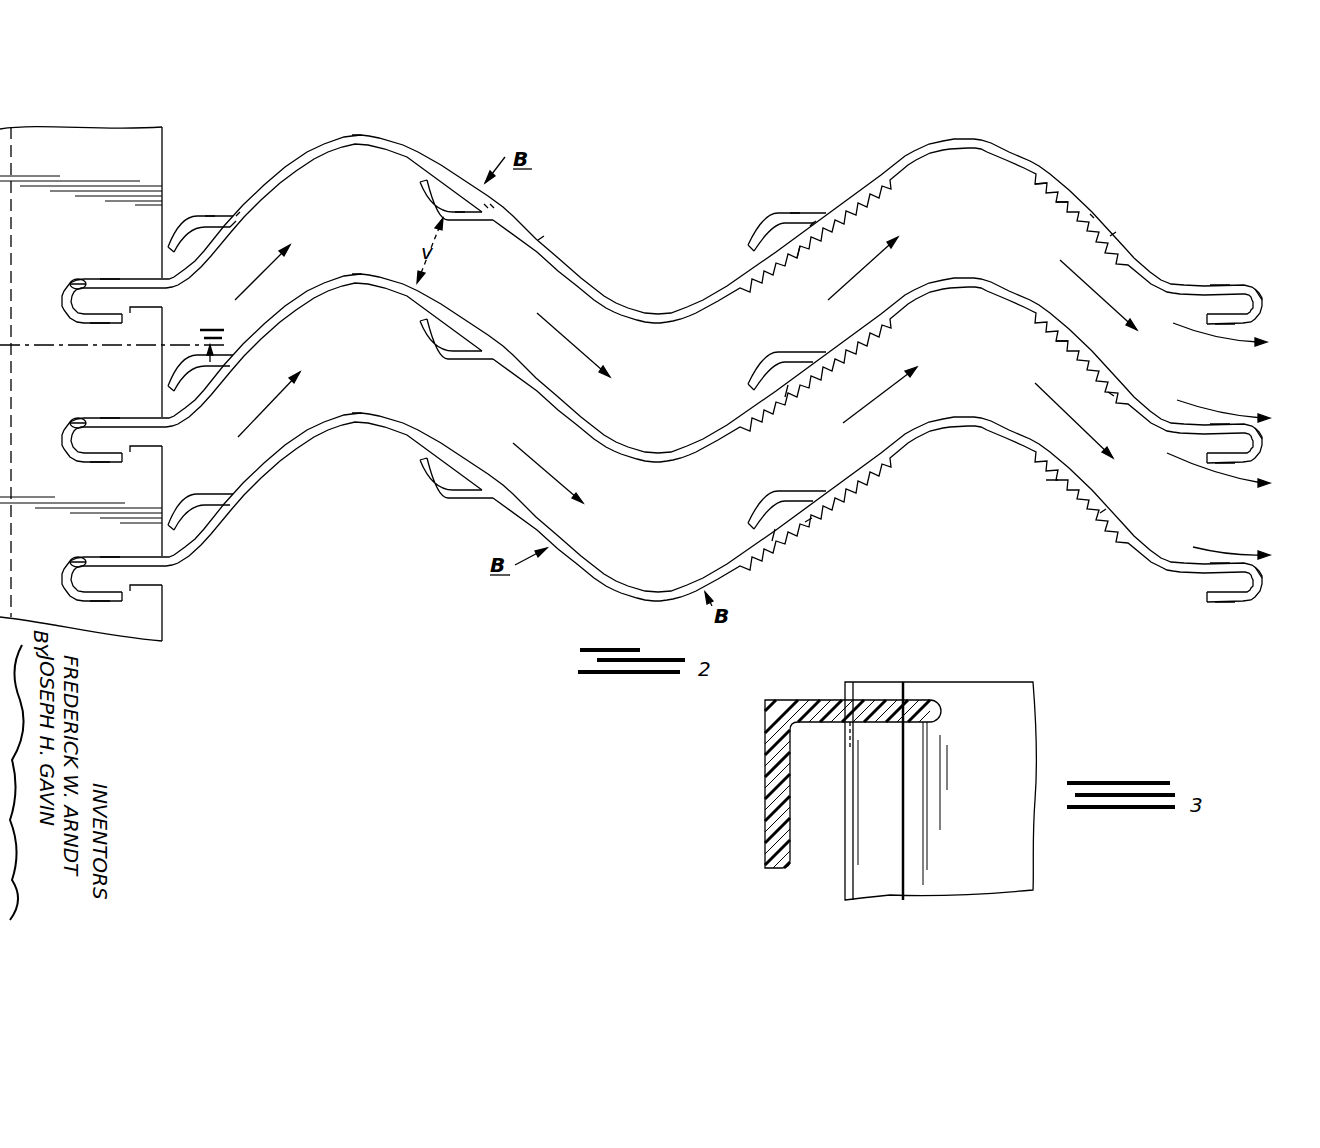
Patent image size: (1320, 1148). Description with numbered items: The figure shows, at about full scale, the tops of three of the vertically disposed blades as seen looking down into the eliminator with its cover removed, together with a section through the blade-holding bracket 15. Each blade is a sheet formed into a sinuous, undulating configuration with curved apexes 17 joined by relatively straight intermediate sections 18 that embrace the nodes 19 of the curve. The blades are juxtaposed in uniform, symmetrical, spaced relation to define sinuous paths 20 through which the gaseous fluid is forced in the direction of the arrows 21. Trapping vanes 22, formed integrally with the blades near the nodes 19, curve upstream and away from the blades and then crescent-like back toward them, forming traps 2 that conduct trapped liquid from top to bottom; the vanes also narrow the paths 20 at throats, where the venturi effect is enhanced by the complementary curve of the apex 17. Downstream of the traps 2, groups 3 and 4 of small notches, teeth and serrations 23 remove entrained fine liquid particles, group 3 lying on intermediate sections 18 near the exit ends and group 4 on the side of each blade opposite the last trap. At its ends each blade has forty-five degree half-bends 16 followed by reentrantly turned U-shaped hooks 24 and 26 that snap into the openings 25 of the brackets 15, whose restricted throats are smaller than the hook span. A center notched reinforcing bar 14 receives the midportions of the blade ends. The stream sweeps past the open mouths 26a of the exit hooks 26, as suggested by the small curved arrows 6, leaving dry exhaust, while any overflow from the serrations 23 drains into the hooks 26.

In FIG. 2, the center notched reinforcing bar 14 is at (597, 392).
In FIG. 3, the center notched reinforcing bar 14 is at (1012, 760).
In FIG. 2, the blade-holding bracket 15 is at (158, 127).
In FIG. 3, the blade-holding bracket 15 is at (765, 728).
In FIG. 2, the half-bend 16 is at (170, 281).
In FIG. 2, the curved apex or loop 17 is at (375, 136).
In FIG. 2, the intermediate section 18 is at (541, 238).
In FIG. 2, the node 19 is at (233, 228).
In FIG. 2, the trap 2 is at (205, 238).
In FIG. 2, the sinuous path 20 is at (659, 365).
In FIG. 2, the arrow indicating direction of fluid movement 21 is at (258, 277).
In FIG. 2, the trapping vane 22 is at (207, 216).
In FIG. 2, the serrations 23 is at (1038, 178).
In FIG. 2, the hook at entrance end 24 is at (70, 310).
In FIG. 3, the hook at entrance end 24 is at (845, 872).
In FIG. 2, the opening of holding bracket 25 is at (70, 283).
In FIG. 3, the opening of holding bracket 25 is at (828, 744).
In FIG. 2, the hook at exit end 26 is at (1243, 327).
In FIG. 2, the open mouth of hook 26a is at (1210, 310).
In FIG. 2, the group of serrated liquid removing means 3 is at (1062, 206).
In FIG. 2, the group of serrated liquid removing means 4 is at (797, 262).
In FIG. 2, the small curved arrow 6 is at (1208, 338).